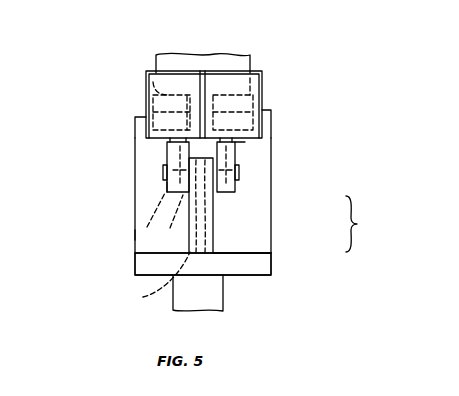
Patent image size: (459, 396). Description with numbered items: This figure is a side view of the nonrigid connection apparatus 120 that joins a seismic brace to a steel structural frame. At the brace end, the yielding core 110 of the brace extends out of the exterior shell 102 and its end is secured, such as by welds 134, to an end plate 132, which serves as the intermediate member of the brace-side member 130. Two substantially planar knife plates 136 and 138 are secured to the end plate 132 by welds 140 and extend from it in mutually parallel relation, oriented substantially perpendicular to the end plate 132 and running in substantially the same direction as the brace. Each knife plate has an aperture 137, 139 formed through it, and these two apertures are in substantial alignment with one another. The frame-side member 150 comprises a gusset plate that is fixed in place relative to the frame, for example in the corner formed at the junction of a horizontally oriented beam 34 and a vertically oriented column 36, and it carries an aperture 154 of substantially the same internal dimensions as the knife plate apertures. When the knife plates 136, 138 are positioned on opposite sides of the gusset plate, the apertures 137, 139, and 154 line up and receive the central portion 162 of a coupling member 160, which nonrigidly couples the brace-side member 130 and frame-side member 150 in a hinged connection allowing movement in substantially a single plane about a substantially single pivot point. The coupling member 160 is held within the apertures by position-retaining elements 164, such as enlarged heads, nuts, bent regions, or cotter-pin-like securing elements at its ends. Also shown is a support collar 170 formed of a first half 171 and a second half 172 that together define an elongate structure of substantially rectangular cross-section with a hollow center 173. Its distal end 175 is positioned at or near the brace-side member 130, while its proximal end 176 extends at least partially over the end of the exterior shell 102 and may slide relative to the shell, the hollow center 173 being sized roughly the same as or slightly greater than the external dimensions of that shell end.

The beam 34 is at (145, 204).
The column 36 is at (208, 273).
The exterior shell 102 is at (248, 64).
The yielding core 110 is at (272, 103).
The nonrigid connection apparatus 120 is at (369, 224).
The brace-side member 130 is at (255, 185).
The end plate 132 is at (166, 142).
The welds 134 is at (160, 100).
The knife plate 136 is at (163, 168).
The aperture 137 is at (135, 233).
The knife plate 138 is at (240, 167).
The aperture 139 is at (242, 234).
The welds 140 is at (167, 150).
The frame-side member 150 is at (271, 240).
The aperture 154 is at (154, 284).
The coupling member 160 is at (228, 237).
The central portion 162 is at (165, 218).
The position-retaining elements 164 is at (167, 182).
The support collar 170 is at (282, 103).
The first half 171 is at (185, 80).
The second half 172 is at (228, 80).
The hollow center 173 is at (240, 117).
The distal end 175 is at (258, 142).
The proximal end 176 is at (272, 80).